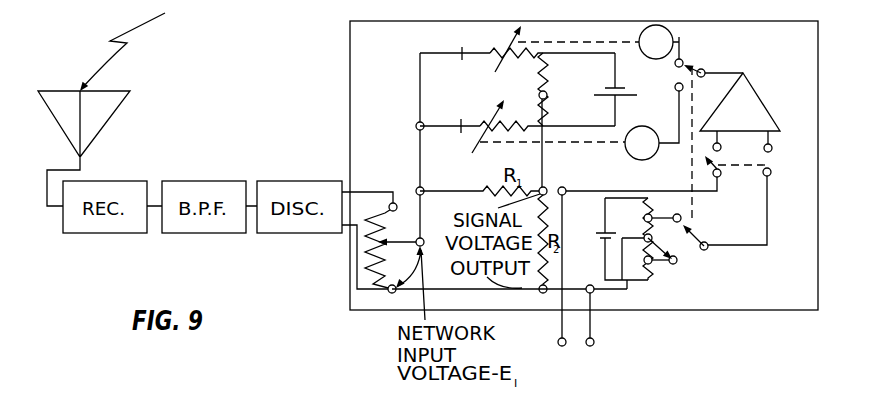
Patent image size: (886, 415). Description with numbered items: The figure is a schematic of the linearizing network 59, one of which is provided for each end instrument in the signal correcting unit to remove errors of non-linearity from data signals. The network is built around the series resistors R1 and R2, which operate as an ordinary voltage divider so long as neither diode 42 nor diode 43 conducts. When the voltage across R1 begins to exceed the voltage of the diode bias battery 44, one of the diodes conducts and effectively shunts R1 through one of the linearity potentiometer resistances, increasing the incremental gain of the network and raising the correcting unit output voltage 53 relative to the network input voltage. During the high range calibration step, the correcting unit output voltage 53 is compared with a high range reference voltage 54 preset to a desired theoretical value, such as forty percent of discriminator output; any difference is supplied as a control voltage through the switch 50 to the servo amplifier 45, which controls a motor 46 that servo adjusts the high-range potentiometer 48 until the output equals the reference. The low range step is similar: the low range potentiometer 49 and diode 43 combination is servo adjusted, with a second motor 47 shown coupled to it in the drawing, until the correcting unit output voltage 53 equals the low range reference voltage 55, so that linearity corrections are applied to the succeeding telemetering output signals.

The diode 42 is at (465, 48).
The diode 43 is at (450, 125).
The diode bias battery 44 is at (630, 93).
The servo amplifier 45 is at (764, 100).
The motor 46 is at (679, 37).
The motor M2 47 is at (652, 158).
The high-range potentiometer 48 is at (521, 106).
The low range potentiometer 49 is at (504, 123).
The switch 50 is at (760, 162).
The correcting unit output voltage 53 is at (580, 303).
The high range reference voltage 54 is at (656, 237).
The low range reference voltage 55 is at (662, 243).
The linearizing network 59 is at (347, 74).